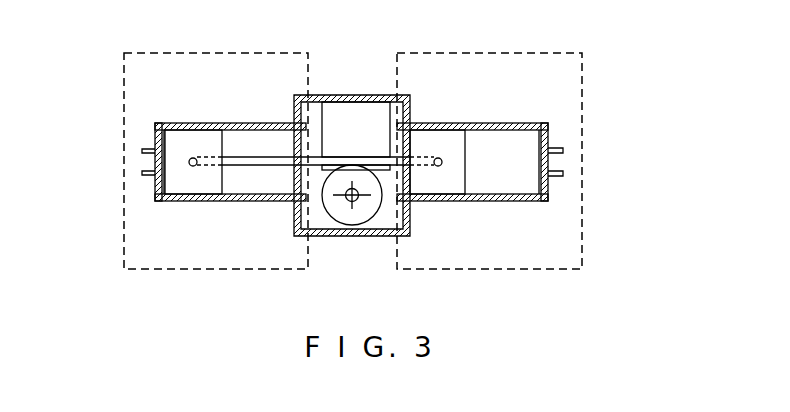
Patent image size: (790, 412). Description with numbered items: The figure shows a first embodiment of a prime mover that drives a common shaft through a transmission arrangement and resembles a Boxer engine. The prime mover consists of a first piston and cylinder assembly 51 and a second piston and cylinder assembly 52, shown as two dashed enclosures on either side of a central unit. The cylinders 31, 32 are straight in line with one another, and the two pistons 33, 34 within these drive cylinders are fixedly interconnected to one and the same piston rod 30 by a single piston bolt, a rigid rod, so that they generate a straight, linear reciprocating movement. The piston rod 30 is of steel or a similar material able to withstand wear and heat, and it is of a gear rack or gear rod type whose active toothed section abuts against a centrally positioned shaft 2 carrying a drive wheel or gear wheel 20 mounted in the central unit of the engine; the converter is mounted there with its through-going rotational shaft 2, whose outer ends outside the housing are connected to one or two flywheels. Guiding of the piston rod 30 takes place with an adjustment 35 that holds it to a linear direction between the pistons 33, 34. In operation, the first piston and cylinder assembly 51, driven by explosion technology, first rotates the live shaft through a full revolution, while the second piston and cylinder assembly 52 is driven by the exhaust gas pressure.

The shaft 2 is at (354, 200).
The gear wheel 20 is at (382, 207).
The piston rod 30 is at (257, 167).
The cylinder 31 is at (169, 123).
The cylinder 32 is at (527, 123).
The piston 33 is at (193, 140).
The piston 34 is at (445, 140).
The adjustment 35 is at (352, 112).
The first piston and cylinder assembly 51 is at (124, 269).
The second piston and cylinder assembly 52 is at (582, 269).